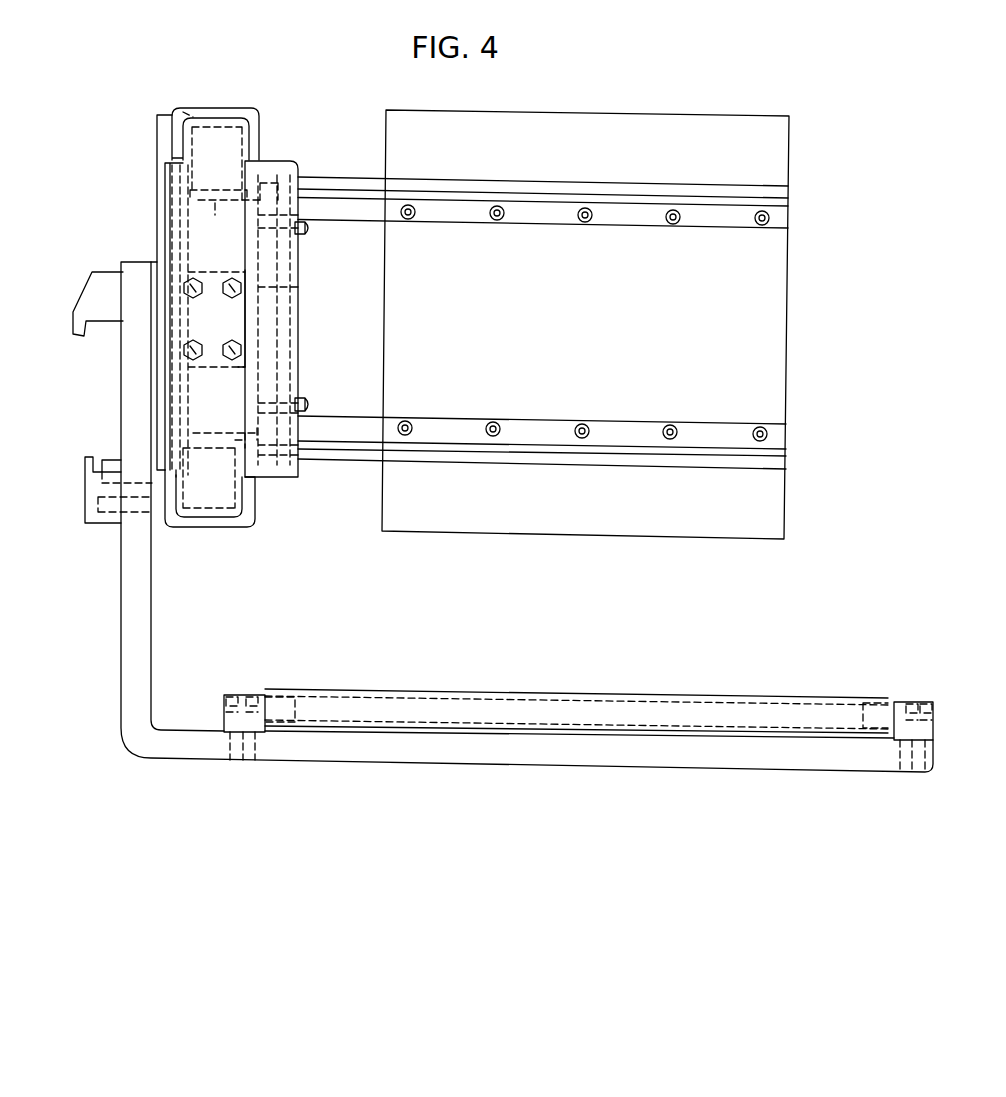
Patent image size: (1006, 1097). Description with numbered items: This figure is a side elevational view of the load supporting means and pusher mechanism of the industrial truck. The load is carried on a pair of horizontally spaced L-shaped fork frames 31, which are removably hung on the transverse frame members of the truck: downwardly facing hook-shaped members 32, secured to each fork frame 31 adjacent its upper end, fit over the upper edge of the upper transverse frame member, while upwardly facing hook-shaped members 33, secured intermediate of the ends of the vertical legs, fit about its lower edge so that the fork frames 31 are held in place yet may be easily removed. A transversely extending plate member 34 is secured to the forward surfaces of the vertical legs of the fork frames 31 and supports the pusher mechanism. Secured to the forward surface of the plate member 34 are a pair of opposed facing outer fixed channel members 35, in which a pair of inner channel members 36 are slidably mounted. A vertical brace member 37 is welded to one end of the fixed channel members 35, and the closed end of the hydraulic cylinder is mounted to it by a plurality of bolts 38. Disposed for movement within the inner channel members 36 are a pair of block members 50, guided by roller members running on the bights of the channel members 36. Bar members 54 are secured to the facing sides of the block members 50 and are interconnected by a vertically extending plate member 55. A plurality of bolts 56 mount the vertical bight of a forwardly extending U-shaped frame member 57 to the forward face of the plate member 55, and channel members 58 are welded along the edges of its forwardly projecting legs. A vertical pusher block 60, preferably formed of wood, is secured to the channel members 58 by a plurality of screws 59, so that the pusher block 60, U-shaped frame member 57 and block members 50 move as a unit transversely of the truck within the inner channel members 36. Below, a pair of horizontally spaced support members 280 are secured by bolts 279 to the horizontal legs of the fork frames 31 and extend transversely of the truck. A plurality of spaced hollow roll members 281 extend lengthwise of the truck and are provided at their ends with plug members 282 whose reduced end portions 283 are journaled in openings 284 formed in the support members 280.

The fork frame 31 is at (150, 612).
The downwardly facing hook-shaped member 32 is at (105, 292).
The upwardly facing hook-shaped member 33 is at (90, 486).
The plate member 34 is at (157, 120).
The outer fixed channel member 35 is at (225, 108).
The inner slidable channel member 36 is at (188, 112).
The vertical brace member 37 is at (195, 228).
The bolts 38 is at (229, 342).
The block member 50 is at (165, 170).
The bar member 54 is at (215, 210).
The plate member 55 is at (300, 290).
The bolts 56 is at (308, 230).
The U-shaped frame member 57 is at (330, 183).
The channel member 58 is at (470, 218).
The screws 59 is at (409, 220).
The pusher block 60 is at (768, 288).
The bolts 279 is at (230, 746).
The support member 280 is at (224, 720).
The hollow roll member 281 is at (486, 700).
The plug member 282 is at (283, 698).
The reduced end portion 283 is at (252, 695).
The opening 284 is at (228, 695).